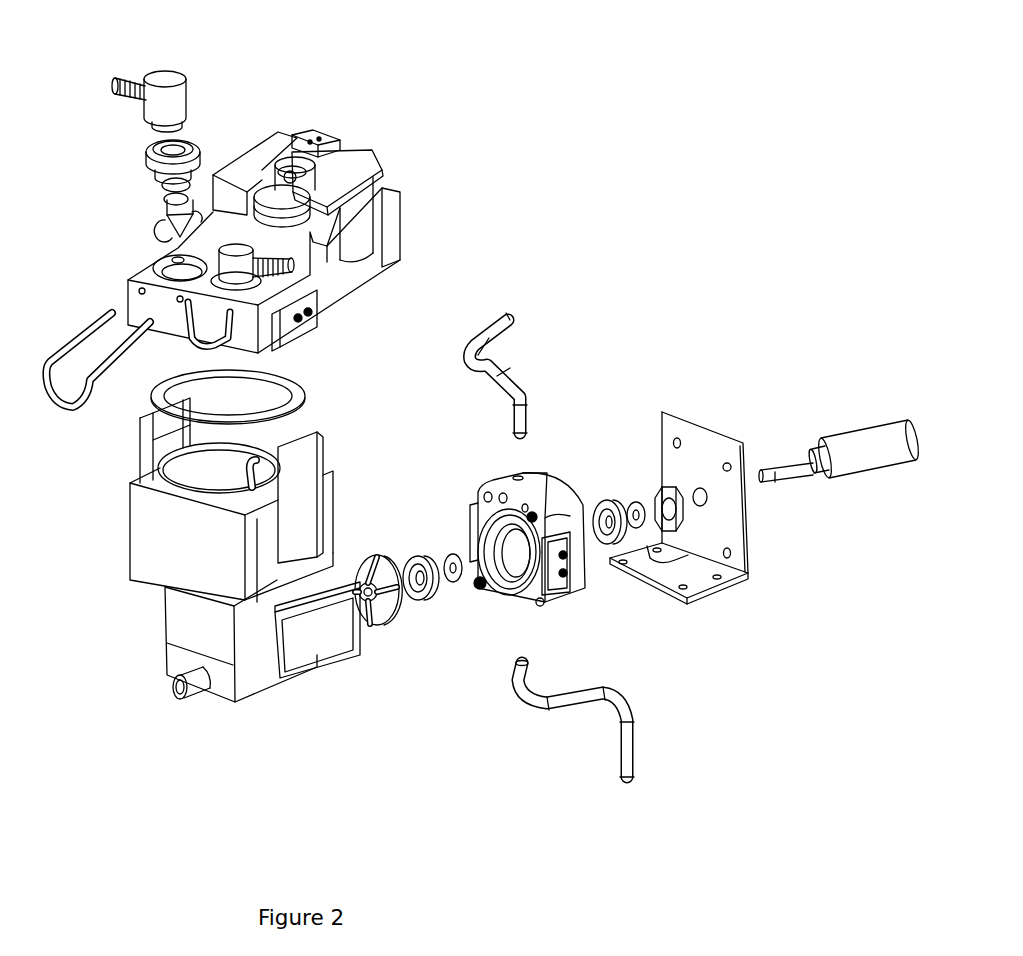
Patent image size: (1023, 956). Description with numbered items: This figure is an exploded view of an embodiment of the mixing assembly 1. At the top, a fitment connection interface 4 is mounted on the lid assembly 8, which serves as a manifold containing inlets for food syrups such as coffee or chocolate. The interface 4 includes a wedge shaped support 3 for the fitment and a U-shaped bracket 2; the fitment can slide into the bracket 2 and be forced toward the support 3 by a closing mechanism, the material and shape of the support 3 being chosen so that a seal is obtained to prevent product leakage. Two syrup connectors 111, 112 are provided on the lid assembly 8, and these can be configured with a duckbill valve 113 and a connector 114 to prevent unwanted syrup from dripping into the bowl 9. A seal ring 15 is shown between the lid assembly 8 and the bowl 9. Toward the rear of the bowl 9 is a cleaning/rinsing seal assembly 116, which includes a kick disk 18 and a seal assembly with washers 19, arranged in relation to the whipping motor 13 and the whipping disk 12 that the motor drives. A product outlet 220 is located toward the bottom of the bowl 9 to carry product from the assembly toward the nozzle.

The pump assembly 1 is at (712, 198).
The U-shaped bracket 2 is at (252, 162).
The wedge shaped support 3 is at (268, 197).
The fitment connection interface 4 is at (370, 133).
The lid assembly 8 is at (322, 282).
The bowl 9 is at (207, 457).
The whipping disk 12 is at (393, 625).
The whipping motor 13 is at (865, 420).
The sealing ring 15 is at (303, 394).
The kick disk 18 is at (427, 603).
The washer 19 is at (451, 583).
The syrup connector 111 is at (130, 77).
The syrup connector 112 is at (177, 260).
The duckbill valve 113 is at (170, 211).
The connector 114 is at (148, 155).
The cleaning/rinsing seal assembly 116 is at (757, 600).
The product outlet 220 is at (198, 688).